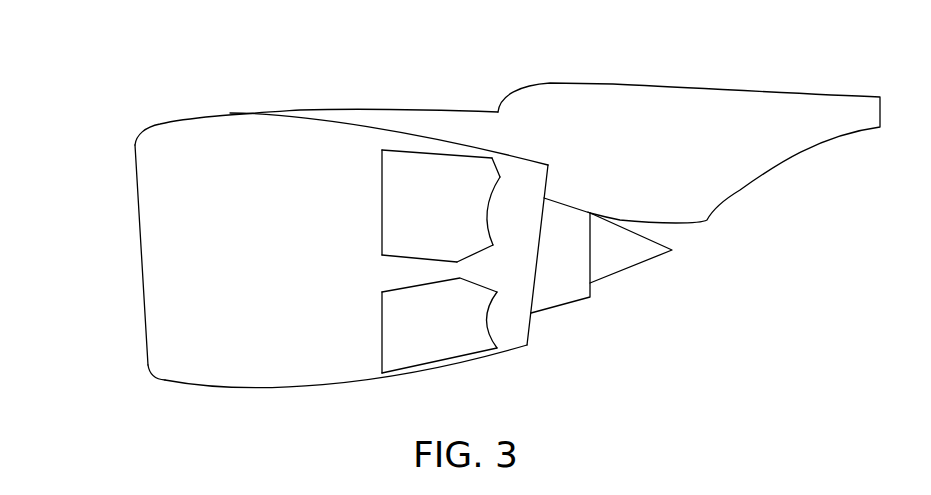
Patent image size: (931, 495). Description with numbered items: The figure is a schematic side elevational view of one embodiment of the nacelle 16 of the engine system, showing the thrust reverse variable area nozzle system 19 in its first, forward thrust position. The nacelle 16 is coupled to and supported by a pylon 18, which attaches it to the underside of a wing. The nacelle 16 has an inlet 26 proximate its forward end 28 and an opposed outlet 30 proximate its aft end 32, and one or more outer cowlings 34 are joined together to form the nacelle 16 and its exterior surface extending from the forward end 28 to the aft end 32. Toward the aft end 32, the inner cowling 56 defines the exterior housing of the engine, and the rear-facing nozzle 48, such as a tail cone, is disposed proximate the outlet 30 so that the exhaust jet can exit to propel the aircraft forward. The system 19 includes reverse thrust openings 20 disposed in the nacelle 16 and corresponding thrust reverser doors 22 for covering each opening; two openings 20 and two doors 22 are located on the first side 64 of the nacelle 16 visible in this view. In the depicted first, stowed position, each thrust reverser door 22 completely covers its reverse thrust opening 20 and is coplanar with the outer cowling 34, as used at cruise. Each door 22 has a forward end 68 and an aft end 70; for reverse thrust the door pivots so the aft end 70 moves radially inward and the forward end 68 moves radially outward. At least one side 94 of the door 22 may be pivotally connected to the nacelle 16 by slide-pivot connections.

The nacelle 16 is at (305, 244).
The pylon 18 is at (689, 115).
The thrust reverse variable area nozzle system 19 is at (424, 299).
The reverse thrust opening 20 is at (424, 255).
The thrust reverser door 22 is at (468, 192).
The inlet 26 is at (136, 202).
The forward end 28 is at (92, 255).
The outlet 30 is at (527, 343).
The aft end 32 is at (613, 281).
The outer cowling 34 is at (180, 382).
The nozzle 48 is at (637, 265).
The inner cowling 56 is at (560, 307).
The first side 64 is at (346, 402).
The forward end 68 is at (382, 178).
The aft end 70 is at (497, 207).
The side 94 is at (400, 150).